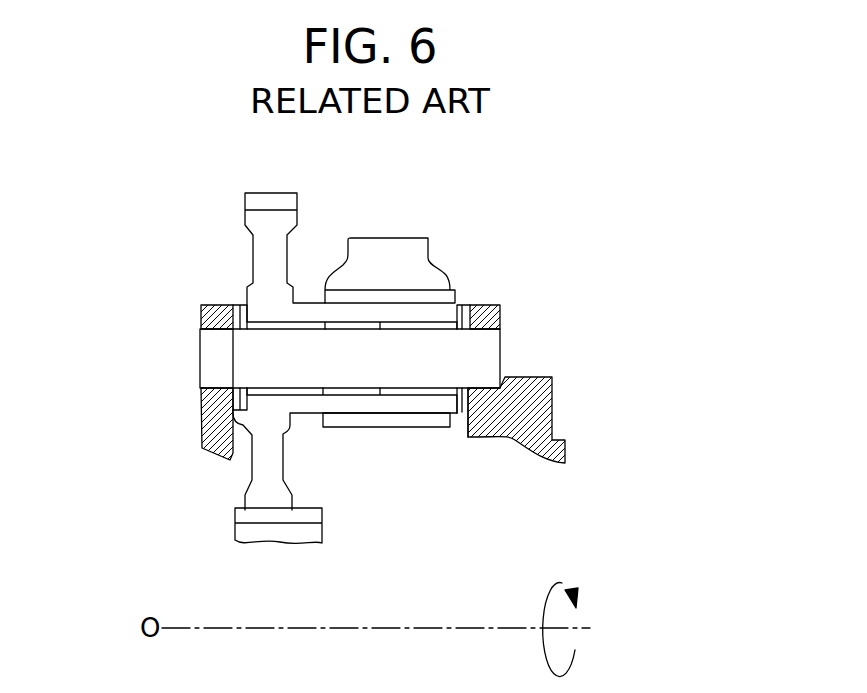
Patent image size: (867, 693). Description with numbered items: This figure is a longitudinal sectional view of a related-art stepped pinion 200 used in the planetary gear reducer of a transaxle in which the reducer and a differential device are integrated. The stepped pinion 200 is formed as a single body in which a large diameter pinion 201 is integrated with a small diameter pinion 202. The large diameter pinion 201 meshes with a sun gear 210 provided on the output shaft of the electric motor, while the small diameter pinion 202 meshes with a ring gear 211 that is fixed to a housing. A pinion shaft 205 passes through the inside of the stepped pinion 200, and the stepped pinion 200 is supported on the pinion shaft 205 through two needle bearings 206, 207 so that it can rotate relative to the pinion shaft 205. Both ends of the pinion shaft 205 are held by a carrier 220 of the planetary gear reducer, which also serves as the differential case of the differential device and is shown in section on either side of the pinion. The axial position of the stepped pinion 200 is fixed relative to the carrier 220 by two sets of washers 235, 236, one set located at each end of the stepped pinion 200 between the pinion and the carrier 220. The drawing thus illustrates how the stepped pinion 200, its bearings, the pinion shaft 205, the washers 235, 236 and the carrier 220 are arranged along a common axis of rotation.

The stepped pinion 200 is at (188, 222).
The large diameter pinion 201 is at (270, 228).
The small diameter pinion 202 is at (375, 409).
The pinion shaft 205 is at (233, 353).
The needle bearing 206 is at (310, 396).
The needle bearing 207 is at (435, 396).
The sun gear 210 is at (267, 530).
The ring gear 211 is at (413, 255).
The carrier 220 is at (207, 417).
The washer 235 is at (235, 307).
The washer 236 is at (463, 305).